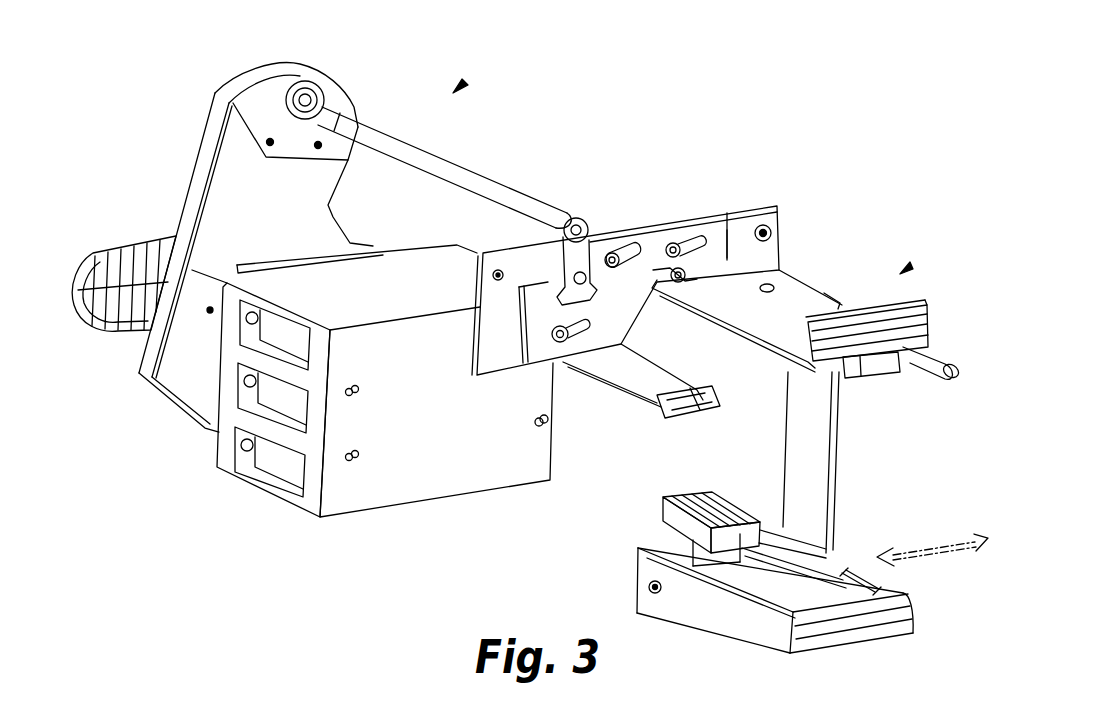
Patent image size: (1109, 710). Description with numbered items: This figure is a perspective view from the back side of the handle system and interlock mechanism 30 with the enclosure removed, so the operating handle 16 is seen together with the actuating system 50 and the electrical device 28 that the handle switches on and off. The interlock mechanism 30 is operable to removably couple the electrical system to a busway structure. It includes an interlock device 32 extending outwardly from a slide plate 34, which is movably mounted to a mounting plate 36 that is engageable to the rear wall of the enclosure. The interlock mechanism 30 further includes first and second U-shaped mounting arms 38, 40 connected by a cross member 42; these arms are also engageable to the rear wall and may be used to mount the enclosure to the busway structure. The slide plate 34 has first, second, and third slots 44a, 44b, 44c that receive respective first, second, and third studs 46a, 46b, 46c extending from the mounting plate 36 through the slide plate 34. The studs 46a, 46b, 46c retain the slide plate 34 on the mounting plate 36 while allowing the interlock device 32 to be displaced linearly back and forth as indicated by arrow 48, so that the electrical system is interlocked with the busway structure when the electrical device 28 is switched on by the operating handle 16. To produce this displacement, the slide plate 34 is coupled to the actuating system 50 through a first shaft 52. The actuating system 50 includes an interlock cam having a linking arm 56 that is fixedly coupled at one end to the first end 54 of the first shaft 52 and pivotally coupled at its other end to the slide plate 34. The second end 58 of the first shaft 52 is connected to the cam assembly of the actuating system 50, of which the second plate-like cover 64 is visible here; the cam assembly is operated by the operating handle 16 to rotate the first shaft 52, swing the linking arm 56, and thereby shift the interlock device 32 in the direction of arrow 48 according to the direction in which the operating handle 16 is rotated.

The operating handle 16 is at (86, 252).
The electrical device 28 is at (300, 505).
The interlock mechanism 30 is at (908, 266).
The interlock device 32 is at (648, 410).
The slide plate 34 is at (722, 222).
The mounting plate 36 is at (467, 380).
The first U-shaped mounting arm 38 is at (930, 320).
The second U-shaped mounting arm 40 is at (915, 612).
The cross member 42 is at (840, 448).
The first slot 44a is at (728, 257).
The second slot 44b is at (633, 242).
The third slot 44c is at (594, 328).
The first stud 46a is at (676, 242).
The second stud 46b is at (610, 251).
The third stud 46c is at (548, 345).
The arrow 48 is at (932, 543).
The actuating system 50 is at (465, 82).
The first shaft 52 is at (393, 136).
The first end 54 is at (572, 216).
The linking arm 56 is at (520, 258).
The second end 58 is at (306, 80).
The second plate-like cover 64 is at (230, 193).